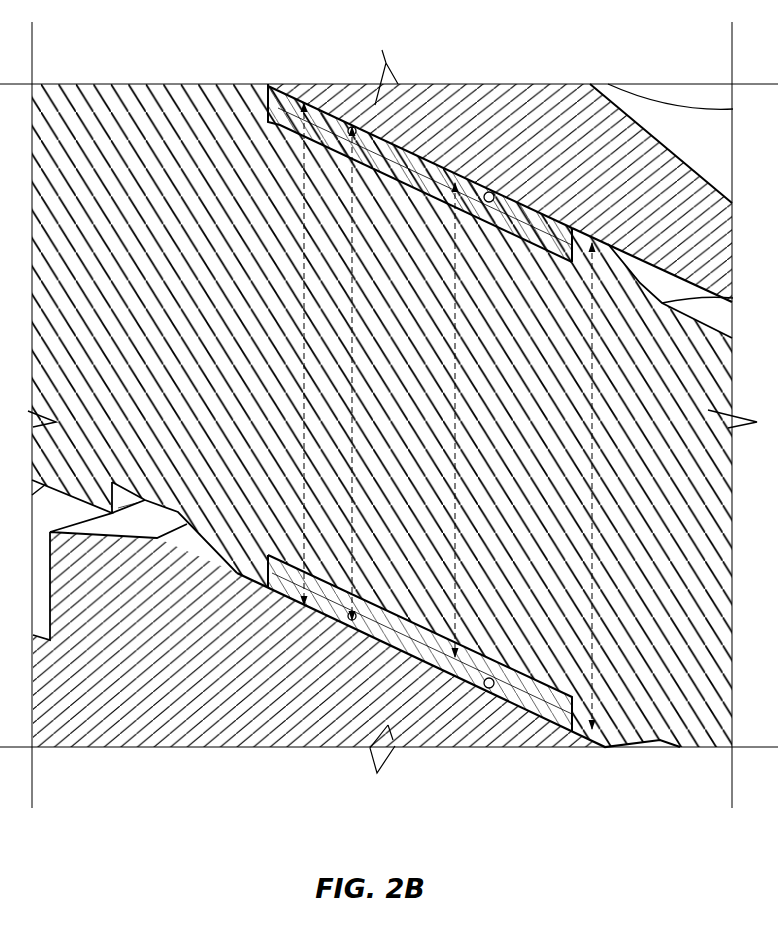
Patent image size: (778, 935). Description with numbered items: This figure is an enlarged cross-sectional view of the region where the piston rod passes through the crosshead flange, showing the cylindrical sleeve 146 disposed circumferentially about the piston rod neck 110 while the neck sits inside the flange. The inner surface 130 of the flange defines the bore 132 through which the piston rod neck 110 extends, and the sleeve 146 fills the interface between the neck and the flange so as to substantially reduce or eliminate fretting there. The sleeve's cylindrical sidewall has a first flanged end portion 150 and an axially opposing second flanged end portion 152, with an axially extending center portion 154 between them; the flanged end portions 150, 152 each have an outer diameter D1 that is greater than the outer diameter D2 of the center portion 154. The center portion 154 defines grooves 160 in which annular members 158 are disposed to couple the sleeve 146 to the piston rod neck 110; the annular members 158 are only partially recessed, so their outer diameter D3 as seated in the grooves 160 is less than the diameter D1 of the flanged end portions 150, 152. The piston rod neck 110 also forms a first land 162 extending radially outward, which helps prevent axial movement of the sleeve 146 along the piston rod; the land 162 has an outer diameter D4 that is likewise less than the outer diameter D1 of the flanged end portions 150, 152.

The piston rod neck 110 is at (236, 581).
The inner surface of the flange 130 is at (458, 647).
The bore 132 is at (567, 264).
The cylindrical sleeve 146 is at (440, 676).
The first flanged end portion 150 is at (430, 185).
The second flanged end portion 152 is at (298, 103).
The axially extending center portion 154 is at (405, 150).
The annular member 158 is at (353, 124).
The annular groove 160 is at (368, 617).
The first land 162 is at (602, 245).
The outer diameter of the flanged end portions D1 is at (302, 297).
The outer diameter of the center portion D2 is at (453, 440).
The outer diameter of the annular members D3 is at (354, 304).
The outer diameter of the lands D4 is at (590, 372).